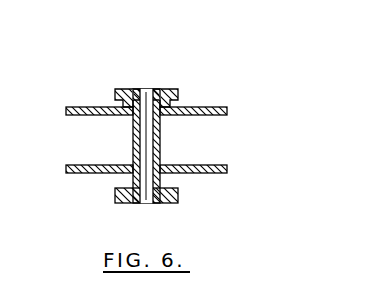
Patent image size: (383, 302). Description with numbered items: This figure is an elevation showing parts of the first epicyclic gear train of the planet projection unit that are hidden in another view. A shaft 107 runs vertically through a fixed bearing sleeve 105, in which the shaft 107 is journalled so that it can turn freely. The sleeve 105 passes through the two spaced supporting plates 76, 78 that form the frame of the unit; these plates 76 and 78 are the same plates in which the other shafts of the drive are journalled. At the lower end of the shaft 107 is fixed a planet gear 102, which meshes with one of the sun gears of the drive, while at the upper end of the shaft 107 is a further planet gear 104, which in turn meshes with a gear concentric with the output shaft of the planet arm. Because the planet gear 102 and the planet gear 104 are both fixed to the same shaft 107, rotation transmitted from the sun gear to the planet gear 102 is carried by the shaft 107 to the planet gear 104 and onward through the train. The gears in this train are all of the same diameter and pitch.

The plate 76 is at (223, 115).
The plate 78 is at (96, 173).
The planet gear 102 is at (172, 202).
The planet gear 104 is at (167, 89).
The fixed bearing sleeve 105 is at (136, 138).
The shaft 107 is at (146, 146).